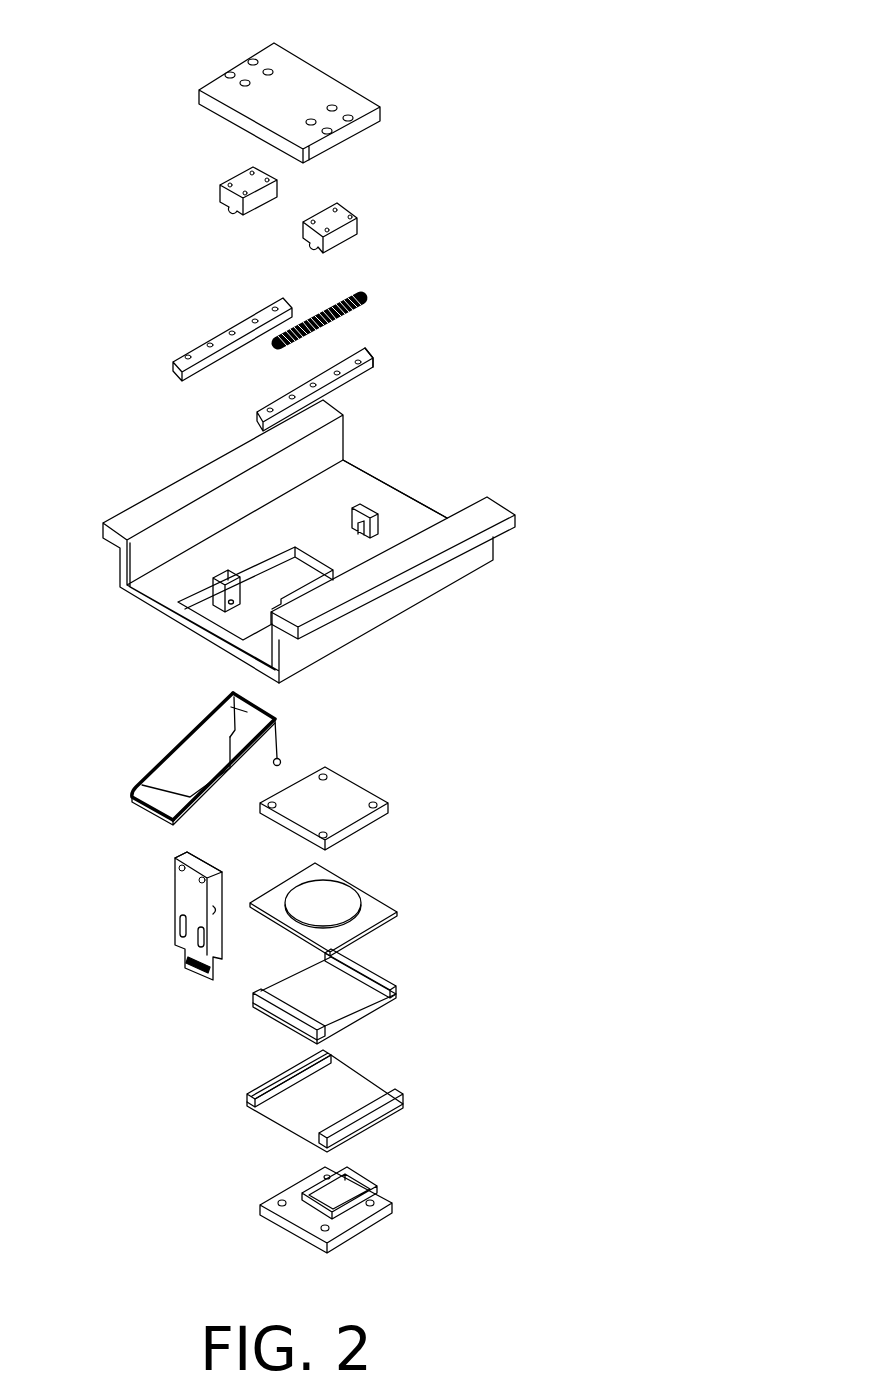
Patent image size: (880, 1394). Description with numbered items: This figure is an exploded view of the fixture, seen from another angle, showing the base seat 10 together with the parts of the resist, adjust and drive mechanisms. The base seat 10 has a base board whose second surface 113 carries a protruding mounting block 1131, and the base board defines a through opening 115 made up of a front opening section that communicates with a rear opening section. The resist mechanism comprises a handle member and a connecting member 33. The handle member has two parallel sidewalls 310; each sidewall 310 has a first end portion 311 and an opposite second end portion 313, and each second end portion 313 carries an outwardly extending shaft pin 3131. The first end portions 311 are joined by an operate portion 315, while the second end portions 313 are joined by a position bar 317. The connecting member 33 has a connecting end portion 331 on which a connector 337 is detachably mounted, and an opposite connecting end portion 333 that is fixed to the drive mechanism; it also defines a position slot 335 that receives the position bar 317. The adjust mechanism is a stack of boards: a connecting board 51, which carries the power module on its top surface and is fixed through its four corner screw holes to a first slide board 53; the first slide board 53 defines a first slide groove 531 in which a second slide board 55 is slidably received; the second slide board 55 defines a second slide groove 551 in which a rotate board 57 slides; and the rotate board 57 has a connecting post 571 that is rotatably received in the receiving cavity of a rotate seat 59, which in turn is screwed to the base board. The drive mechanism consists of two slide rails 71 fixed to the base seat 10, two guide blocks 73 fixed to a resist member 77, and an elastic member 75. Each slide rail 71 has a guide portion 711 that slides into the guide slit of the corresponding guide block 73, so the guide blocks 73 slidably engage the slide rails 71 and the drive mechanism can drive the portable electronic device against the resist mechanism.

The base seat 10 is at (329, 531).
The second surface 113 is at (408, 518).
The mounting block 1131 is at (364, 507).
The through opening 115 is at (232, 617).
The sidewall 310 is at (250, 749).
The first end portion 311 is at (172, 815).
The second end portion 313 is at (277, 718).
The shaft pin 3131 is at (280, 757).
The operate portion 315 is at (163, 795).
The position bar 317 is at (222, 710).
The connecting member 33 is at (166, 905).
The connecting end portion 331 is at (185, 945).
The connecting end portion 333 is at (195, 863).
The position slot 335 is at (215, 907).
The connector 337 is at (185, 967).
The connecting board 51 is at (353, 1218).
The first slide board 53 is at (378, 1084).
The first slide groove 531 is at (348, 1088).
The second slide board 55 is at (338, 1020).
The second slide groove 551 is at (312, 1003).
The rotate board 57 is at (372, 894).
The connecting post 571 is at (345, 897).
The rotate seat 59 is at (345, 803).
The slide rail 71 is at (368, 350).
The guide portion 711 is at (378, 365).
The guide block 73 is at (340, 217).
The elastic member 75 is at (363, 295).
The resist member 77 is at (318, 88).